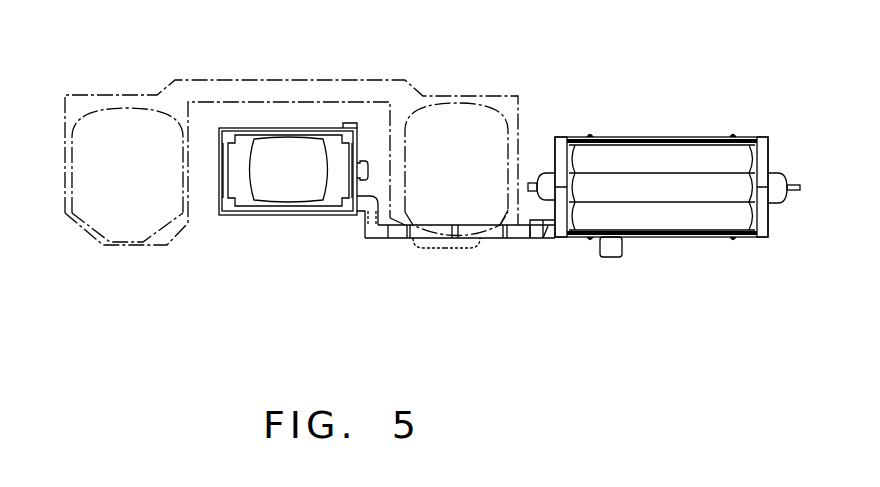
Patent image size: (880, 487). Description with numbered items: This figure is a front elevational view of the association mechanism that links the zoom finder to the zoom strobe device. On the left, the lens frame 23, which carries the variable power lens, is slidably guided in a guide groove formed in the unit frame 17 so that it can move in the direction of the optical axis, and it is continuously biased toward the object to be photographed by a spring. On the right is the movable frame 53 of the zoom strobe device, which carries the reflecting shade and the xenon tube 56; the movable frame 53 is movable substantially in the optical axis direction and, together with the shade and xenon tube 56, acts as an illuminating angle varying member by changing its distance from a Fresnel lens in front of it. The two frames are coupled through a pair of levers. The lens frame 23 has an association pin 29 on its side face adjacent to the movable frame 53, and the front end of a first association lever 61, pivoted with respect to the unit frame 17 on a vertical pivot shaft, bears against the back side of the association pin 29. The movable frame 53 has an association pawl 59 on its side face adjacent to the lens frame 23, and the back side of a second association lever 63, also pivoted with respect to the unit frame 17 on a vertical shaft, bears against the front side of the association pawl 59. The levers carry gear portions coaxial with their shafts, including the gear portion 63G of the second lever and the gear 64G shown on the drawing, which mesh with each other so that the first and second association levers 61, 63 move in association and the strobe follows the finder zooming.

The unit frame 17 is at (183, 83).
The lens frame 23 is at (305, 130).
The association pin 29 is at (365, 217).
The movable frame 53 is at (618, 137).
The xenon tube 56 is at (787, 182).
The association pawl 59 is at (543, 238).
The first association lever 61 is at (389, 238).
The second association lever 63 is at (515, 238).
The gear portion 63G is at (468, 248).
The gear 64G is at (435, 247).